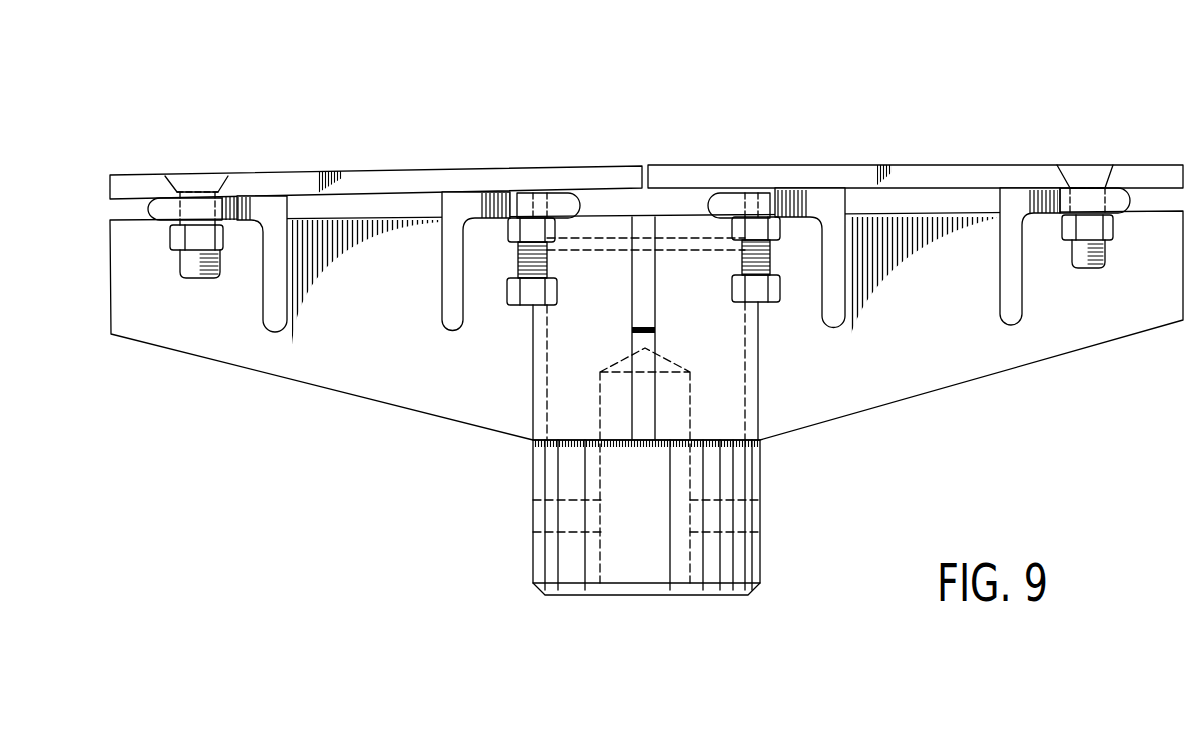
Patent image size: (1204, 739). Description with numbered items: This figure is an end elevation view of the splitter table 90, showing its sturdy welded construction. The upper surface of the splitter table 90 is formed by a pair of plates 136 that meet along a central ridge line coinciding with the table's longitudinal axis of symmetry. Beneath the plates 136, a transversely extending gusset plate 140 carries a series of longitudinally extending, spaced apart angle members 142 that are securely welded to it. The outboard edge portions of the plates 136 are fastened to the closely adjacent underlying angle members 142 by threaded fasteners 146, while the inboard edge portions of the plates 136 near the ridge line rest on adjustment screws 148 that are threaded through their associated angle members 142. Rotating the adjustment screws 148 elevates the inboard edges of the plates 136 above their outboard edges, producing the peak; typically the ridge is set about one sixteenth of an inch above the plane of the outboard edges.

The splitter table 90 is at (635, 326).
The plates 136 is at (413, 180).
The gusset plates 140 is at (932, 350).
The angle members 142 is at (455, 310).
The threaded fasteners 146 is at (190, 263).
The adjustment screws 148 is at (767, 293).